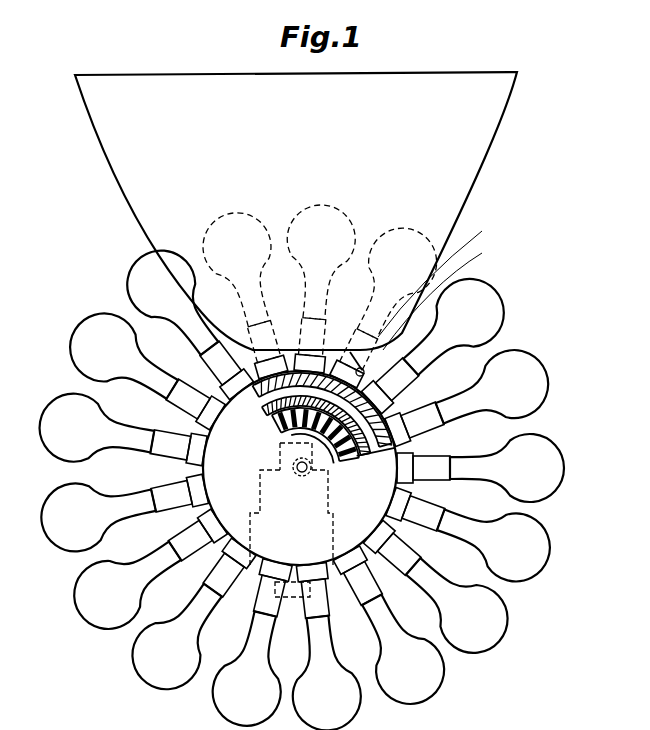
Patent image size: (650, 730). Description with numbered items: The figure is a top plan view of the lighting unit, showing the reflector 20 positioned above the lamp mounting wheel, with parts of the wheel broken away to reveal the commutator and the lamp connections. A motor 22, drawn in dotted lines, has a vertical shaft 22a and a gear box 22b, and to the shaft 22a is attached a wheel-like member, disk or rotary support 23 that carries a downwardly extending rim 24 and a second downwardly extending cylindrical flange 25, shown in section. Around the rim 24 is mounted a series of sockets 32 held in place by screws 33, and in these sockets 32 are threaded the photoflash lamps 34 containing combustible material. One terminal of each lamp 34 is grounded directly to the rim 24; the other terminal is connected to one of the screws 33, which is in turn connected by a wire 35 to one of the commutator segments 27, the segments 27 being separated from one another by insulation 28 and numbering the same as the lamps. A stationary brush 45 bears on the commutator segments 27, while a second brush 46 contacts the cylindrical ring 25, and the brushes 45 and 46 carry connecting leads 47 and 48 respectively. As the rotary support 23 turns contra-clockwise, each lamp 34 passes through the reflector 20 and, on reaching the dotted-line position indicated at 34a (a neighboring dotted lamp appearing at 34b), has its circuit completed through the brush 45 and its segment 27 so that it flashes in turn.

The reflector 20 is at (497, 131).
The motor 22 is at (258, 583).
The vertical shaft 22a is at (291, 517).
The gear box 22b is at (280, 466).
The wheel-like member, disk or rotary support 23 is at (200, 472).
The rim 24 is at (398, 443).
The cylindrical flange 25 is at (380, 476).
The commutator segments 27 is at (282, 431).
The insulation 28 is at (344, 473).
The sockets 32 is at (372, 588).
The screws 33 is at (300, 330).
The flashlamps 34 is at (566, 468).
The flashlamp at firing position 34a is at (416, 232).
The blade in hopper 34b is at (335, 208).
The wires 35 is at (408, 406).
The brush 45 is at (294, 462).
The brush 46 is at (353, 363).
The connecting lead 47 is at (484, 253).
The connecting lead 48 is at (441, 279).